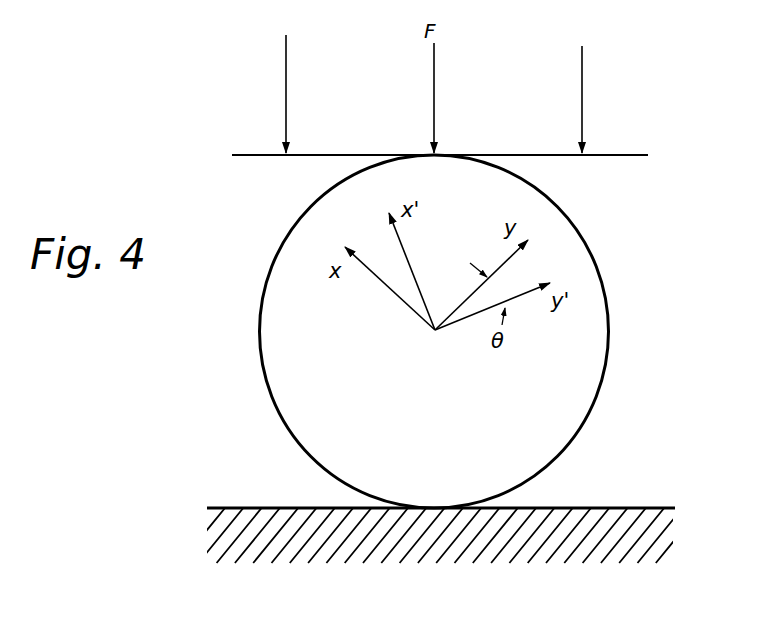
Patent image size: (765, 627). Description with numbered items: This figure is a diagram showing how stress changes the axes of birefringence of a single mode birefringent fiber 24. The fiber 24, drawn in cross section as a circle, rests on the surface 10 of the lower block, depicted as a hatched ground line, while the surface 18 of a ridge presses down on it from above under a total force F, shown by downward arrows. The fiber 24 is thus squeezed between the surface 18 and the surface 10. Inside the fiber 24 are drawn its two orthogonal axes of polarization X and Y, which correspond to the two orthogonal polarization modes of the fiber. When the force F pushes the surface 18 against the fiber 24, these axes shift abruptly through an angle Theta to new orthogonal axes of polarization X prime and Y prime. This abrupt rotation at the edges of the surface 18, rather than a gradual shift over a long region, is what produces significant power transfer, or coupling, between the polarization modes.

The surface of the lower block 10 is at (632, 508).
The surface of the ridge 18 is at (623, 158).
The birefringent fiber 24 is at (609, 315).